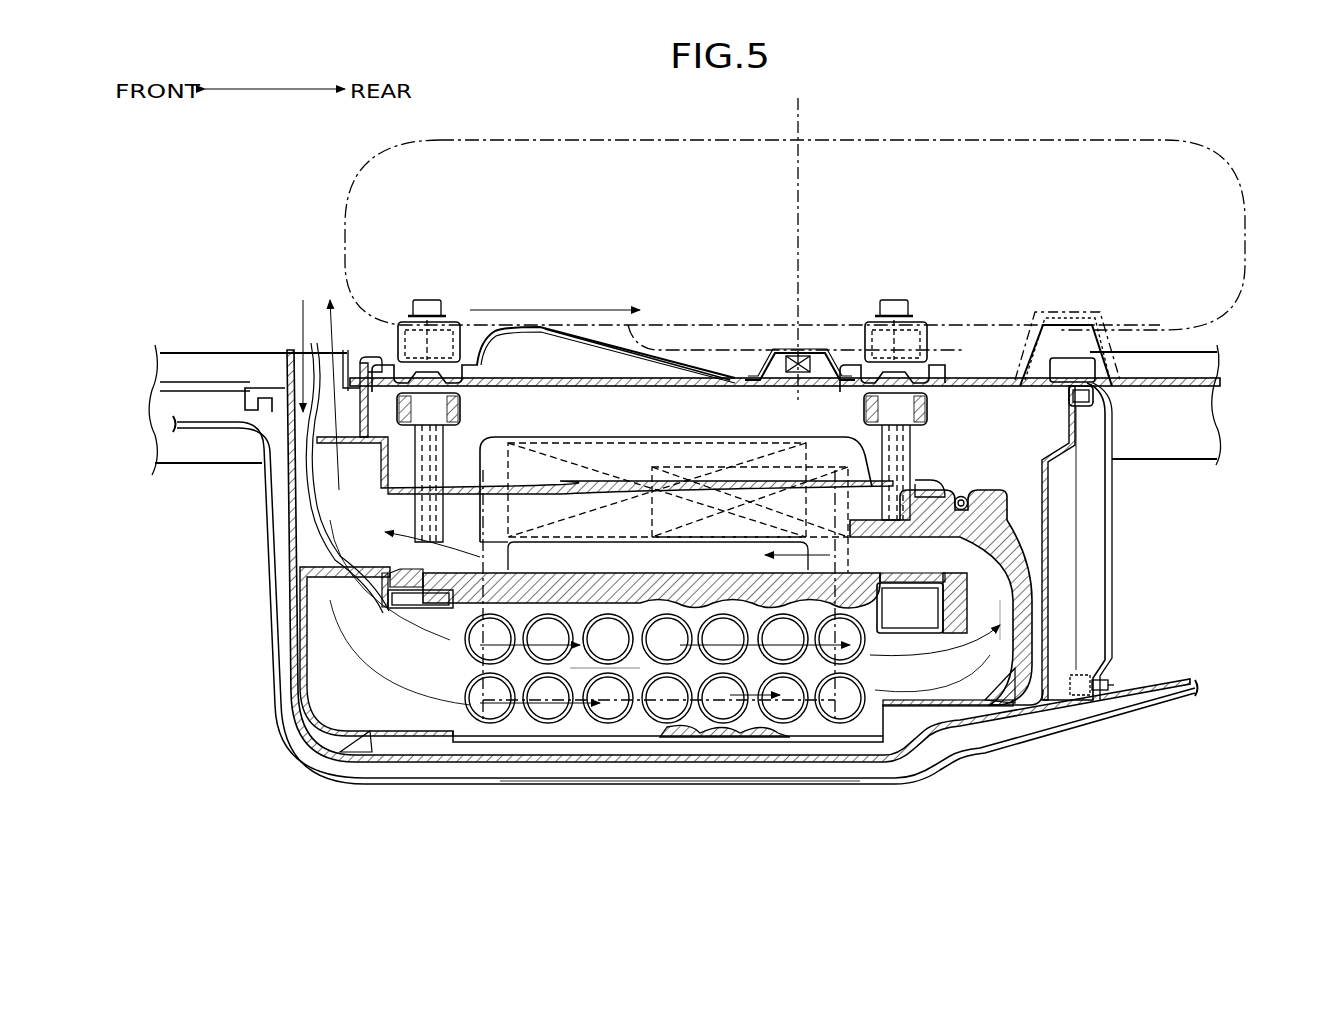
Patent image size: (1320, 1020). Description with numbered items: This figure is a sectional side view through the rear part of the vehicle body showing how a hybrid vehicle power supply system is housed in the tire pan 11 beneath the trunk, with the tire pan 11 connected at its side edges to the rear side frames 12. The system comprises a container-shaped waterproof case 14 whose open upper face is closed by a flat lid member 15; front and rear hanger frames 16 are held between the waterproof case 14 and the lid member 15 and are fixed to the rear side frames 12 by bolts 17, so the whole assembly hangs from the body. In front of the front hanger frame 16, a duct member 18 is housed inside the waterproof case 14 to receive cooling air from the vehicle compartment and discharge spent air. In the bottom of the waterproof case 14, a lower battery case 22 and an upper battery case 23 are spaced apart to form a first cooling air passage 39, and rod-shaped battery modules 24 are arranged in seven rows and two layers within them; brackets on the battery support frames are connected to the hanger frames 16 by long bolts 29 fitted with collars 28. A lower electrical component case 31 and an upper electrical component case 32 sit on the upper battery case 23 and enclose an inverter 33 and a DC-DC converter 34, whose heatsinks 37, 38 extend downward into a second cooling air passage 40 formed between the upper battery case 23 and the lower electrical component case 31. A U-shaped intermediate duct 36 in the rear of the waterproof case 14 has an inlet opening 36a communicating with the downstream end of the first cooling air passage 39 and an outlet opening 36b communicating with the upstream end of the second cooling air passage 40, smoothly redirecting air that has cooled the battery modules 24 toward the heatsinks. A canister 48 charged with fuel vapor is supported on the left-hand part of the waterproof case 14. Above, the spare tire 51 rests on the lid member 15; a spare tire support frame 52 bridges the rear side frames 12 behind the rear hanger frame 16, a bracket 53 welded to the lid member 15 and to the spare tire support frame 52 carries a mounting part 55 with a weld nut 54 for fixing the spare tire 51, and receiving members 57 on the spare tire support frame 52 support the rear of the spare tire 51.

The tire pan 11 is at (790, 785).
The rear side frame 12 is at (1172, 352).
The waterproof case 14 is at (622, 772).
The lid member 15 is at (508, 374).
The hanger frame 16 is at (460, 405).
The bolt 17 is at (427, 300).
The duct member 18 is at (290, 575).
The lower battery case 22 is at (530, 742).
The upper battery case 23 is at (688, 578).
The battery module 24 is at (466, 696).
The collar 28 is at (412, 462).
The long bolt 29 is at (450, 385).
The lower electrical component case 31 is at (470, 587).
The upper electrical component case 32 is at (700, 437).
The inverter 33 is at (605, 441).
The DC-DC converter 34 is at (815, 465).
The intermediate duct 36 is at (1012, 515).
The inlet opening 36a is at (878, 668).
The outlet opening 36b is at (877, 555).
The heatsink 37 is at (608, 639).
The heatsink 38 is at (783, 639).
The first cooling air passage 39 is at (646, 679).
The second cooling air passage 40 is at (724, 566).
The canister 48 is at (665, 742).
The spare tire 51 is at (885, 140).
The spare tire support frame 52 is at (1065, 368).
The bracket 53 is at (683, 350).
The weld nut 54 is at (803, 355).
The mounting part 55 is at (757, 353).
The receiving member 57 is at (1083, 330).